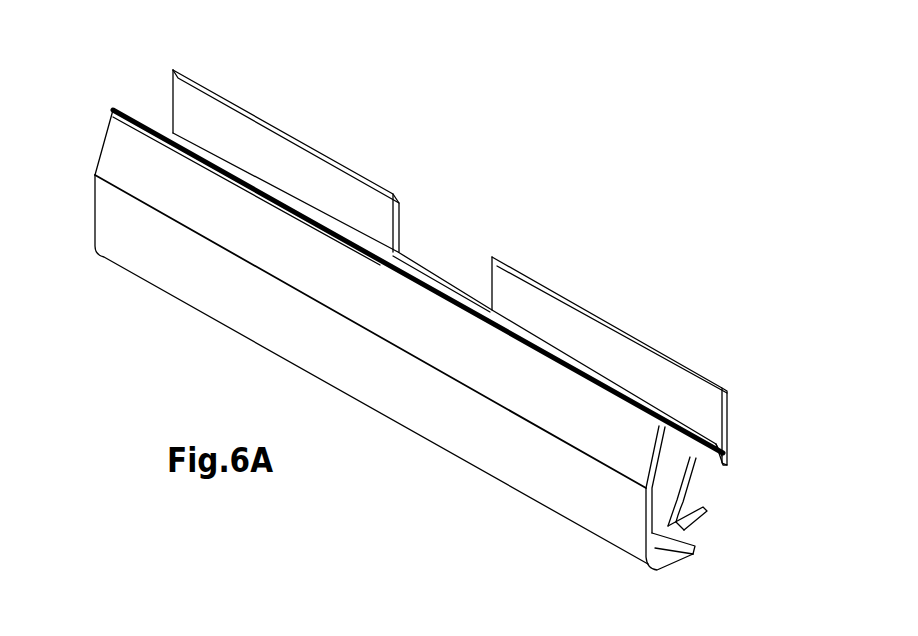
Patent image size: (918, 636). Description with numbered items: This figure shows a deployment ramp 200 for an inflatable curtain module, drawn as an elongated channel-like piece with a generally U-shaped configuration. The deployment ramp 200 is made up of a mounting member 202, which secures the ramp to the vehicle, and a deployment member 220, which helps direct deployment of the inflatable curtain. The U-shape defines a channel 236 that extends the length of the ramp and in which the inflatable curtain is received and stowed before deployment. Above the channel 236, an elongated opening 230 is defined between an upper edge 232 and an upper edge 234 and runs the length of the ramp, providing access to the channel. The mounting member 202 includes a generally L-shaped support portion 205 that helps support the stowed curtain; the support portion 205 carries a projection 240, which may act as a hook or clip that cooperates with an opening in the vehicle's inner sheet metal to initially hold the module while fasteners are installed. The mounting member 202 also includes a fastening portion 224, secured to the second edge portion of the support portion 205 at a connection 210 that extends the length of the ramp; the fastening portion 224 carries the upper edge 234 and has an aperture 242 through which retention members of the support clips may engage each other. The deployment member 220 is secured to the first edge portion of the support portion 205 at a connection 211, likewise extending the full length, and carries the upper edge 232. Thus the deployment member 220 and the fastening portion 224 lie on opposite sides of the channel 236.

The deployment ramp 200 is at (680, 263).
The deployment member 220 is at (134, 150).
The upper edge 232 is at (111, 109).
The upper edge 234 is at (176, 66).
The fastening portion 224 is at (330, 154).
The elongated opening 230 is at (373, 238).
The aperture 242 is at (448, 244).
The connection 210 is at (708, 443).
The mounting member 202 is at (731, 443).
The channel 236 is at (678, 456).
The support portion 205 is at (710, 487).
The connection 211 is at (668, 549).
The projection 240 is at (704, 522).